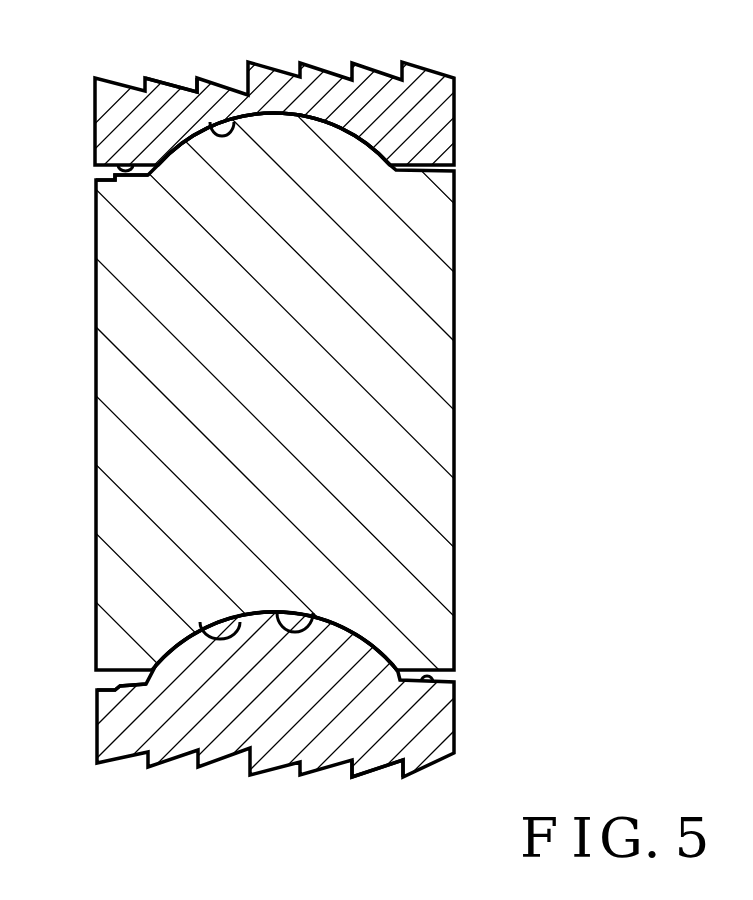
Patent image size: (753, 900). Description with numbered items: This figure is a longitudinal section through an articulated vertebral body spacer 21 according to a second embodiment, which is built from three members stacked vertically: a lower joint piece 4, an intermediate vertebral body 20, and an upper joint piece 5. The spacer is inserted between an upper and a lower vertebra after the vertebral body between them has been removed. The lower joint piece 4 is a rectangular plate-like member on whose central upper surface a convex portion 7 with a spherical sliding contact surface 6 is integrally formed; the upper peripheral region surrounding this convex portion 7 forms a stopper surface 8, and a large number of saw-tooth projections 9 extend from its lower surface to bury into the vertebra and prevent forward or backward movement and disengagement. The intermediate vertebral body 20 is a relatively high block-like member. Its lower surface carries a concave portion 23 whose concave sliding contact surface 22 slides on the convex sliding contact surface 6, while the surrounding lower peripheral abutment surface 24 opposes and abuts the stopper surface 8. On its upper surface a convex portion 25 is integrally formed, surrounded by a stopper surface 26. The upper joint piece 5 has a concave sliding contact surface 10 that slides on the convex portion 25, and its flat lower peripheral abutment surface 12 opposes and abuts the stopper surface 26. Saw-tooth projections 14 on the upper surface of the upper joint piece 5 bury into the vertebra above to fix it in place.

The lower joint piece 4 is at (463, 708).
The upper joint piece 5 is at (468, 121).
The spherical sliding contact surface 6 is at (170, 658).
The convex portion 7 is at (343, 647).
The stopper surface 8 is at (433, 683).
The saw-tooth projections 9 is at (373, 777).
The concave sliding contact surface 10 is at (213, 118).
The abutment surface 12 is at (118, 165).
The saw-tooth projections 14 is at (178, 88).
The intermediate vertebral body 20 is at (467, 429).
The articulated vertebral body spacer 21 is at (546, 264).
The concave sliding contact surface 22 is at (214, 635).
The concave portion 23 is at (336, 622).
The abutment surface 24 is at (113, 683).
The convex portion 25 is at (279, 120).
The stopper surface 26 is at (112, 177).